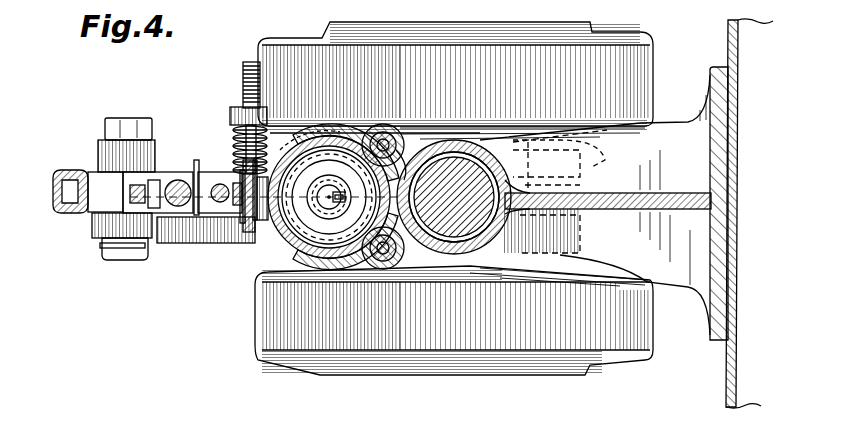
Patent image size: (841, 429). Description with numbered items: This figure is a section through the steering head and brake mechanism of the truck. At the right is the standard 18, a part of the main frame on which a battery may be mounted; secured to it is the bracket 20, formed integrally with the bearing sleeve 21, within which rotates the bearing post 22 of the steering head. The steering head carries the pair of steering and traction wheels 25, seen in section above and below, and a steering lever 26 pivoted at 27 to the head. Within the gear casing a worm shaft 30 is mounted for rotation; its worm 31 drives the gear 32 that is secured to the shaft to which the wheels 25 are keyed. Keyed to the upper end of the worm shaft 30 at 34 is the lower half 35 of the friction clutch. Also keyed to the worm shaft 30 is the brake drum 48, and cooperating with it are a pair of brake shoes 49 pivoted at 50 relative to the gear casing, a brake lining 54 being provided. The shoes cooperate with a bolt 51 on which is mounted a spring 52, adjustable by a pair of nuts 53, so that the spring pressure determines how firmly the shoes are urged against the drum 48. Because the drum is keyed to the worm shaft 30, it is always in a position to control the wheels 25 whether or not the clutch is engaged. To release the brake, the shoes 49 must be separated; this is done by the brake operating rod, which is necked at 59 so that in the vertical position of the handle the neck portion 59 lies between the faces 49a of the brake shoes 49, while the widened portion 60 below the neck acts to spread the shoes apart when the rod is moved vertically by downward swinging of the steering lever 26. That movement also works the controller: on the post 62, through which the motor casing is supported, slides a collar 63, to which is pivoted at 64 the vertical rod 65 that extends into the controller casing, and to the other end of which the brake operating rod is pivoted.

The standard 18 is at (736, 248).
The bracket 20 is at (650, 240).
The bearing sleeve 21 is at (478, 242).
The bearing post 22 is at (455, 240).
The steering and traction wheels 25 is at (290, 38).
The steering lever 26 is at (55, 183).
The pivot 27 is at (100, 250).
The worm shaft 30 is at (268, 240).
The worm 31 is at (262, 250).
The gear 32 is at (564, 162).
The key 34 is at (338, 206).
The lower half of friction clutch 35 is at (396, 160).
The brake drum 48 is at (352, 145).
The brake shoes 49 is at (330, 134).
The faces of brake shoes 49a is at (197, 170).
The pivot 50 is at (386, 138).
The bolt 51 is at (248, 230).
The spring 52 is at (236, 125).
The nuts 53 is at (243, 96).
The brake lining 54 is at (345, 138).
The neck portion 59 is at (222, 228).
The widened portion 60 is at (213, 168).
The post 62 is at (170, 180).
The collar 63 is at (165, 243).
The pivot 64 is at (132, 240).
The vertical rod 65 is at (118, 190).